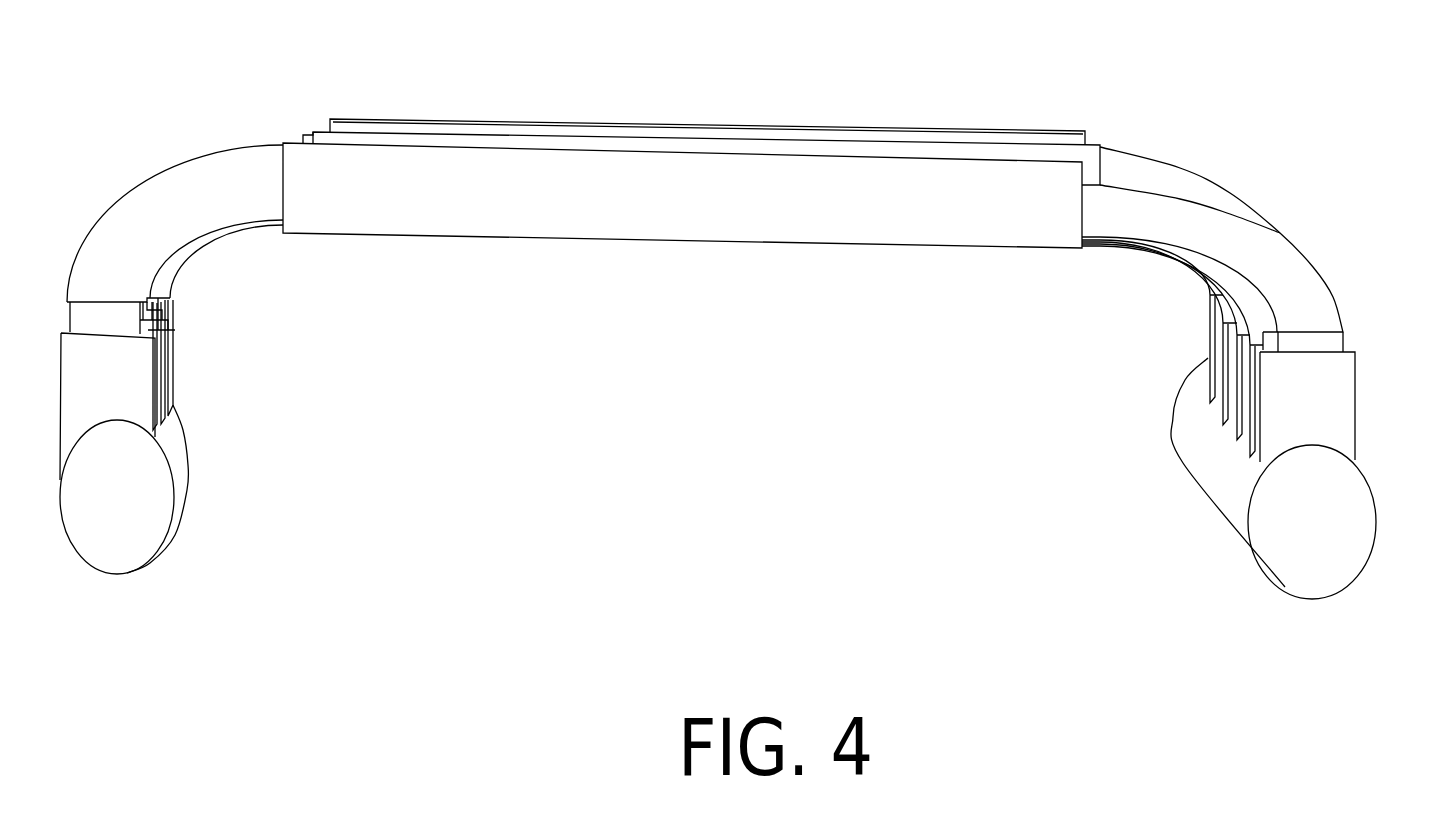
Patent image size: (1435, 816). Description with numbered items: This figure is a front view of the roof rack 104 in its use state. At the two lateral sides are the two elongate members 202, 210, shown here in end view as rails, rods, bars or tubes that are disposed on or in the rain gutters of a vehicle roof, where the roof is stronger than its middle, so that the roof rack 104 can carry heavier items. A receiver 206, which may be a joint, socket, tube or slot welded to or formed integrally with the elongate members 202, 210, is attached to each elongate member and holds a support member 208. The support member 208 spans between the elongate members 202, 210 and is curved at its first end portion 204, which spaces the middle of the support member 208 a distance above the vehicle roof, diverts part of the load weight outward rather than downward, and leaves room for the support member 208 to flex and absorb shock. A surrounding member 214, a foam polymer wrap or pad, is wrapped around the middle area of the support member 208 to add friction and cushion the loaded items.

The roof rack 104 is at (987, 61).
The elongate member 202 is at (170, 500).
The first end portion 204 is at (1320, 303).
The receiver 206 is at (1320, 375).
The support member 208 is at (1158, 155).
The elongate member 210 is at (1362, 505).
The surrounding member 214 is at (778, 128).